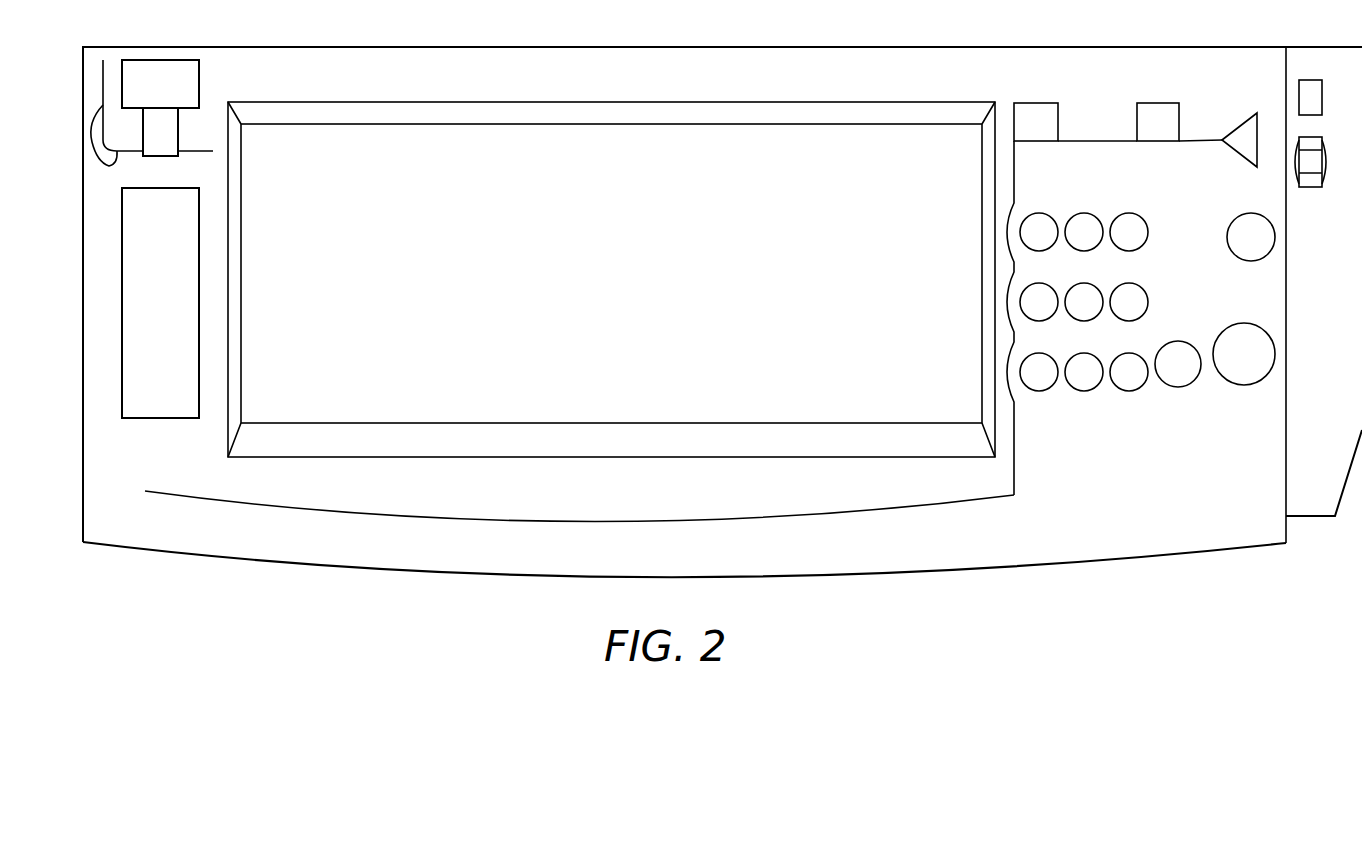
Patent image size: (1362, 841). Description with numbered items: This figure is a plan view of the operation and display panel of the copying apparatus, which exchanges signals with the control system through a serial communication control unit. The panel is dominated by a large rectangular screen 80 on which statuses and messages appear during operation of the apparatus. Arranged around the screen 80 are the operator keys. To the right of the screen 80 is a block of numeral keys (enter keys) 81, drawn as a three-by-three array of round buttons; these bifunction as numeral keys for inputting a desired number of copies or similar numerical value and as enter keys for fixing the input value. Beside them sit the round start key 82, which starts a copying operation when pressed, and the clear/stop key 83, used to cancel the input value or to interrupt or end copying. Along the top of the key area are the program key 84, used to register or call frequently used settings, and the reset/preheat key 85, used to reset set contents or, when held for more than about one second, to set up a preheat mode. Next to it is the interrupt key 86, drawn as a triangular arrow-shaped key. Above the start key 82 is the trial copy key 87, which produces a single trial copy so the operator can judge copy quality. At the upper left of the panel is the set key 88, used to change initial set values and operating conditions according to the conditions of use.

The screen 80 is at (454, 145).
The numeral keys (enter keys) 81 is at (1074, 400).
The start key 82 is at (1246, 385).
The clear/stop key 83 is at (1177, 388).
The program key 84 is at (1033, 109).
The reset/preheat key 85 is at (1160, 110).
The interrupt key 86 is at (1240, 130).
The trial copy key 87 is at (1240, 225).
The set key 88 is at (178, 130).